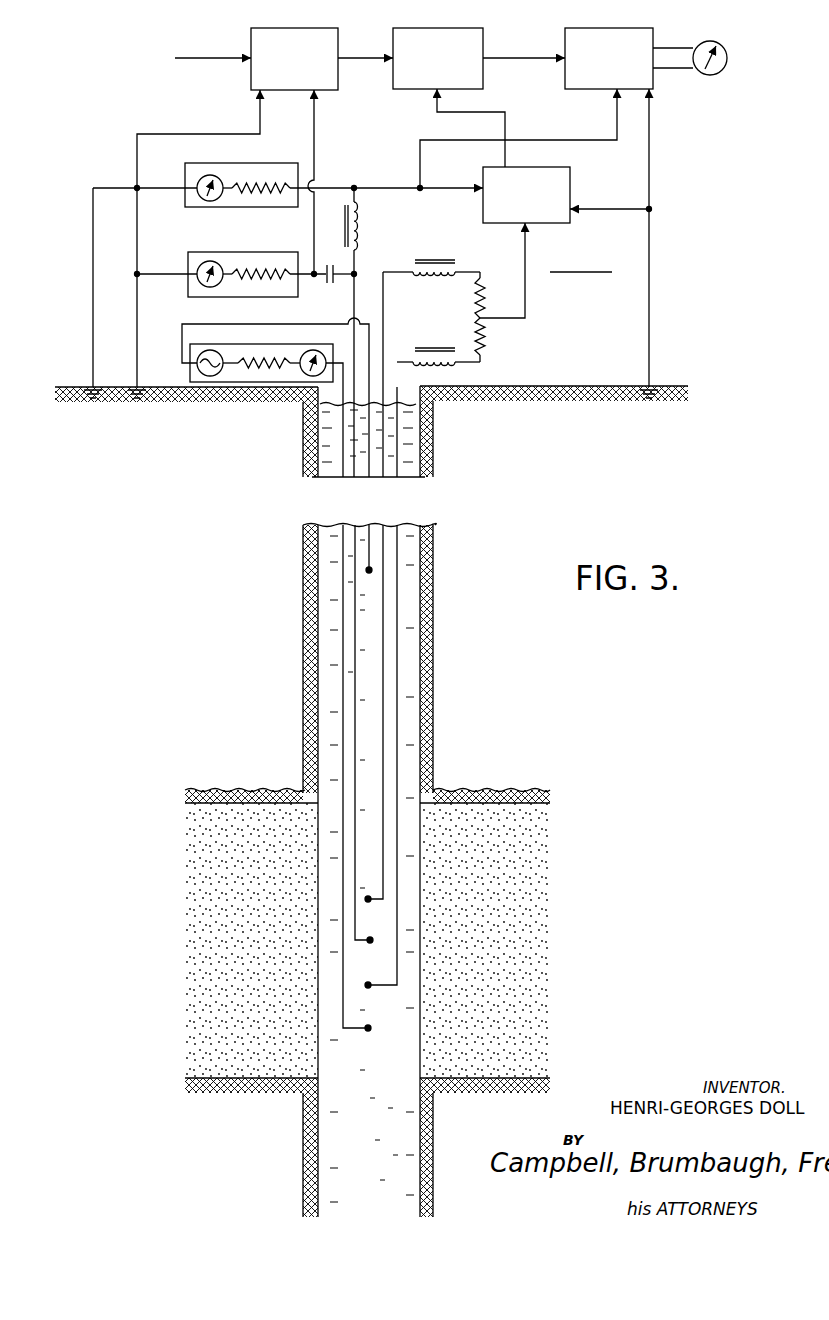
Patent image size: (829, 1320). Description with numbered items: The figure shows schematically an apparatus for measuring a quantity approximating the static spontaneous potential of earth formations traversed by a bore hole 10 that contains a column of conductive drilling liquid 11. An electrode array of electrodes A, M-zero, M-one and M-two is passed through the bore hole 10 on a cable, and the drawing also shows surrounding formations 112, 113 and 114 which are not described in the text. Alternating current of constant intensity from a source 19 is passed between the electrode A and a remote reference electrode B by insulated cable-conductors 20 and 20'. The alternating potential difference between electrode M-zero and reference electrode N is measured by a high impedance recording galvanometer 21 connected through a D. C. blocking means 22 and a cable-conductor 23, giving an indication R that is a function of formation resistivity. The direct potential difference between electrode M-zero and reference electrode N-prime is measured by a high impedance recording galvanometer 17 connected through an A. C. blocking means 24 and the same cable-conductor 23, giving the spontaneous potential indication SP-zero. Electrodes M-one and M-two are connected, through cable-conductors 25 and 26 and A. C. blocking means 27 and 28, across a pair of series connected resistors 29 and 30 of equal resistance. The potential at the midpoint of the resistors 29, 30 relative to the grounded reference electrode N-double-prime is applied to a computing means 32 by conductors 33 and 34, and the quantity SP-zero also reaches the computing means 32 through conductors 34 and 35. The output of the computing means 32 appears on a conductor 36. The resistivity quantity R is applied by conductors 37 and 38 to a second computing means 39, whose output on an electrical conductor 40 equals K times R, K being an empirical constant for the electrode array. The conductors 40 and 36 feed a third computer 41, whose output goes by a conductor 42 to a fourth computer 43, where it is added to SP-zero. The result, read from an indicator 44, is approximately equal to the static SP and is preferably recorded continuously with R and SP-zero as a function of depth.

The bore hole 10 is at (418, 396).
The conductive liquid 11 is at (374, 1119).
The high impedance recording galvanometer 17 is at (250, 164).
The source 19 is at (295, 344).
The insulated cable-conductor 20 is at (322, 712).
The insulated cable-conductor 20' is at (395, 329).
The high impedance recording galvanometer 21 is at (254, 254).
The D. C. blocking means 22 is at (330, 282).
The cable-conductor 23 is at (358, 525).
The A. C. blocking means 24 is at (360, 232).
The cable-conductor 25 is at (378, 545).
The cable-conductor 26 is at (398, 838).
The A. C. blocking means 27 is at (435, 258).
The A. C. blocking means 28 is at (432, 347).
The resistor 29 is at (484, 300).
The resistor 30 is at (485, 348).
The computing means 32 is at (566, 194).
The conductor 33 is at (528, 300).
The conductor 34 is at (651, 270).
The conductor 35 is at (375, 186).
The conductor 36 is at (506, 124).
The conductor 37 is at (318, 150).
The conductor 38 is at (202, 134).
The second computing means 39 is at (308, 29).
The electrical conductor 40 is at (356, 52).
The third computer 41 is at (440, 29).
The conductor 42 is at (516, 52).
The fourth computer 43 is at (612, 29).
The indicator 44 is at (727, 60).
The upper formation 112 is at (500, 662).
The permeable formation 113 is at (500, 942).
The formation 114 is at (490, 1175).